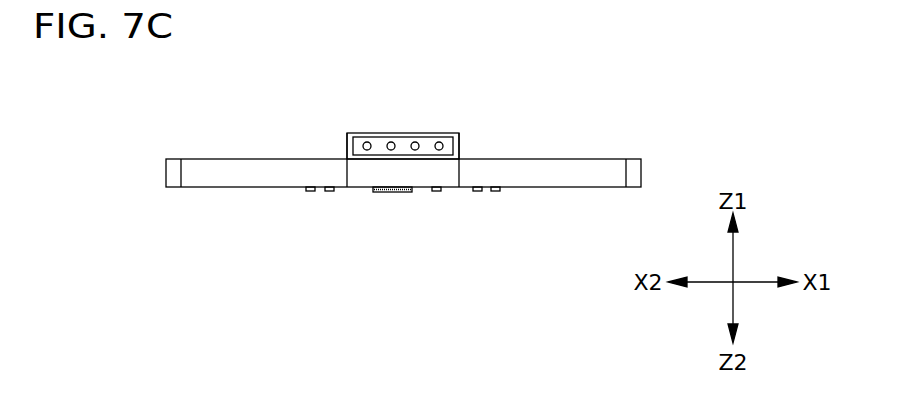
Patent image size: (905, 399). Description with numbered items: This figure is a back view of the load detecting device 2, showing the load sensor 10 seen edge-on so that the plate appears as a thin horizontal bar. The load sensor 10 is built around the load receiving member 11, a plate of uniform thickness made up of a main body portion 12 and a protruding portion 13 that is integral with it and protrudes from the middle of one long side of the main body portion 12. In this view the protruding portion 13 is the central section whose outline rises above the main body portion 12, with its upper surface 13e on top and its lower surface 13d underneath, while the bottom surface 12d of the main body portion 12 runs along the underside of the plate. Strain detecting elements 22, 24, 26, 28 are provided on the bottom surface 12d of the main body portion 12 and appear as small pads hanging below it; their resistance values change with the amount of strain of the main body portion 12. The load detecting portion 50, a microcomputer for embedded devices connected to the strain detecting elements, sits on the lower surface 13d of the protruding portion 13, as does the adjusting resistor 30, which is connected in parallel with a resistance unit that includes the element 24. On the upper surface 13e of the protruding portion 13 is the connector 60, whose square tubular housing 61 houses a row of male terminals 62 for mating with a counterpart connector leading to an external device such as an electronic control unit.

The load detecting device 2 is at (346, 118).
The load sensor 10 is at (192, 161).
The load receiving member 11 is at (191, 180).
The main body portion 12 is at (222, 175).
The bottom surface 12d is at (605, 188).
The protruding portion 13 is at (426, 177).
The lower surface 13d is at (352, 188).
The upper surface 13e is at (359, 159).
The strain detecting element 22 is at (496, 192).
The strain detecting element 24 is at (477, 192).
The strain detecting element 26 is at (329, 192).
The strain detecting element 28 is at (310, 192).
The adjusting resistor 30 is at (436, 192).
The load detecting portion 50 is at (393, 193).
The connector 60 is at (459, 133).
The housing 61 is at (453, 145).
The male terminals 62 is at (367, 142).